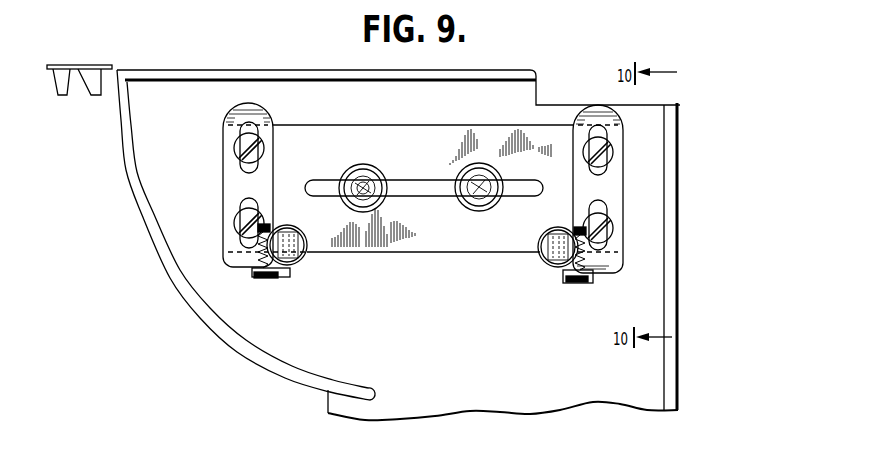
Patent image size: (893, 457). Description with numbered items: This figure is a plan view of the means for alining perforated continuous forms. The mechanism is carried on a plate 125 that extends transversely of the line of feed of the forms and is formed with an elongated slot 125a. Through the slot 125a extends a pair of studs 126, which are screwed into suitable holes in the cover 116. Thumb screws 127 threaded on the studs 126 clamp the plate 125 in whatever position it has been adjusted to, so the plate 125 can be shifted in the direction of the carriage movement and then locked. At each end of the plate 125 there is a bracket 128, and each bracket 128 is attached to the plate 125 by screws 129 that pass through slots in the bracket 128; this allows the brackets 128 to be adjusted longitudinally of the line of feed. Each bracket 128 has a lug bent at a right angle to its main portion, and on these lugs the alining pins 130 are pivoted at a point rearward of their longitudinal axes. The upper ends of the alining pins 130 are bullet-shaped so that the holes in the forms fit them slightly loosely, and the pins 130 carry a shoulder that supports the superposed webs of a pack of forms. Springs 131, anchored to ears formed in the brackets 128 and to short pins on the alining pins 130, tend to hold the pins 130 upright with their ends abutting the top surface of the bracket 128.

The cover 116 is at (515, 378).
The plate 125 is at (410, 238).
The slot 125a is at (415, 184).
The studs 126 is at (358, 180).
The thumb screws 127 is at (361, 210).
The bracket 128 is at (240, 185).
The screws 129 is at (238, 226).
The alining pins 130 is at (299, 258).
The springs 131 is at (256, 253).